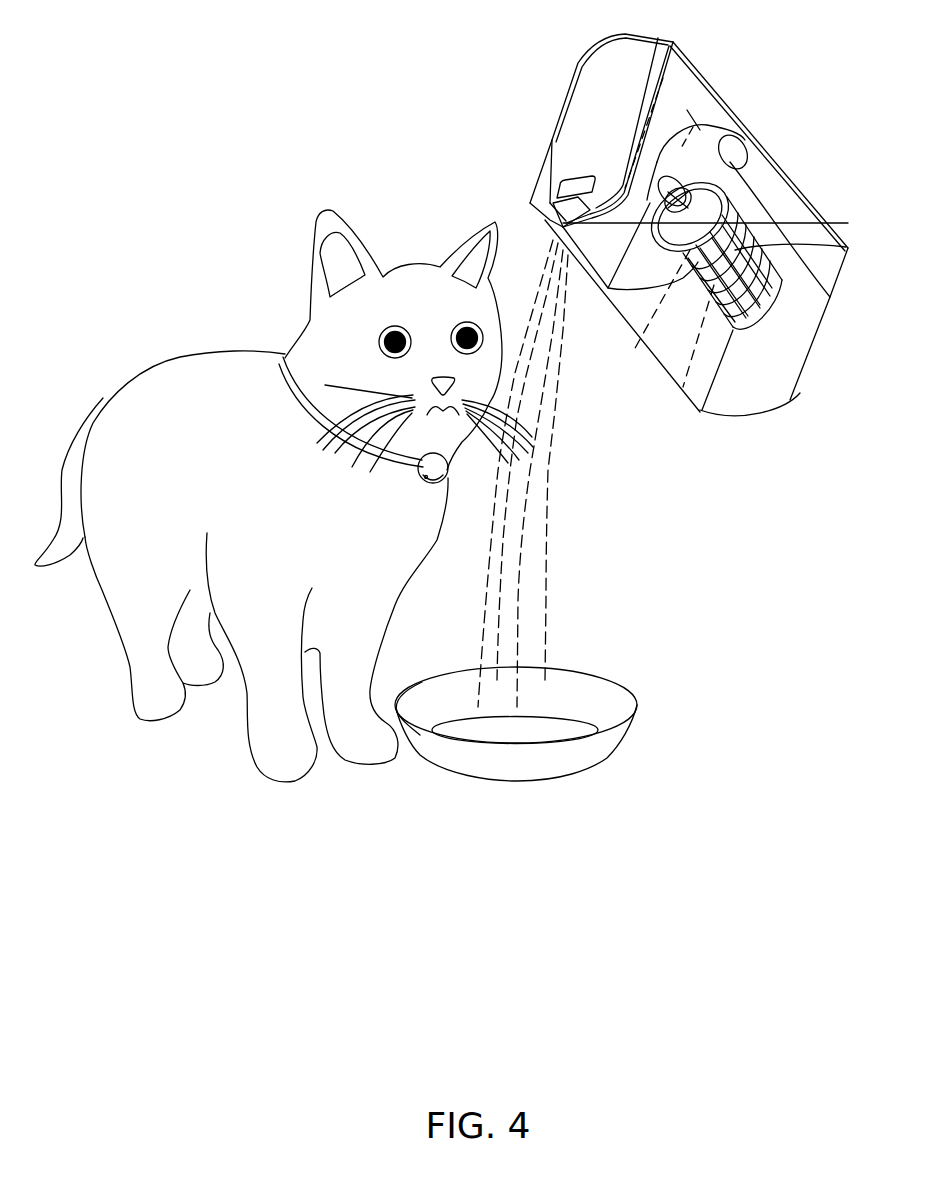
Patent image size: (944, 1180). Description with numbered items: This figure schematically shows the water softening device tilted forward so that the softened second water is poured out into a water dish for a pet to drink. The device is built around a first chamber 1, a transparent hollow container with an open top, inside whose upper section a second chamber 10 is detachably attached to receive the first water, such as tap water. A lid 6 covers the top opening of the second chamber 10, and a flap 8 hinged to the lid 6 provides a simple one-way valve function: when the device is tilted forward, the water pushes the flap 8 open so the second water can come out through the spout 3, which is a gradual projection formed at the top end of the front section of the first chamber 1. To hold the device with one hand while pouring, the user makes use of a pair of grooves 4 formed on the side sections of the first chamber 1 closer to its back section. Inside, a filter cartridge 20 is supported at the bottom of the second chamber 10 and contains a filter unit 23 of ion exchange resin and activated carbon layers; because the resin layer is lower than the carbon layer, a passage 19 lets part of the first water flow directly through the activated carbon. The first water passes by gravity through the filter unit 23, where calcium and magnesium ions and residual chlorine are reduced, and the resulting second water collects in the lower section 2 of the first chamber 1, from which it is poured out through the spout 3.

The first chamber 1 is at (803, 323).
The lower section 2 is at (757, 420).
The spout 3 is at (553, 205).
The grooves 4 is at (752, 167).
The lid 6 is at (588, 76).
The flap 8 is at (568, 203).
The second chamber 10 is at (723, 90).
The passage 19 is at (640, 343).
The filter cartridge 20 is at (780, 220).
The filter unit 23 is at (678, 392).